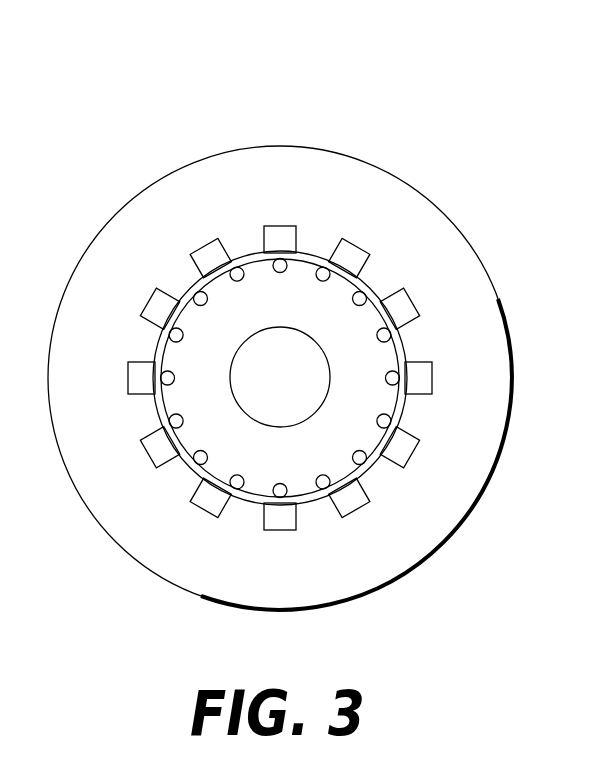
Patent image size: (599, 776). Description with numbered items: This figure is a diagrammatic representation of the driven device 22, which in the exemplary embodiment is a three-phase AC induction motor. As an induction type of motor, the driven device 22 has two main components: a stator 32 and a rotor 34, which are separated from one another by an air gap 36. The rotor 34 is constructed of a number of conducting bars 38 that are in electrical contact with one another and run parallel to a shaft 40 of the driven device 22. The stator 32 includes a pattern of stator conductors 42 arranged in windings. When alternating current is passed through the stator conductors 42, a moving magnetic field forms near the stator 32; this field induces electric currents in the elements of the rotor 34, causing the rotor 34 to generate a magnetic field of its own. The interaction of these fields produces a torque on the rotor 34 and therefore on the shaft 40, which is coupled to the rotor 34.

The driven device 22 is at (106, 150).
The stator 32 is at (418, 211).
The rotor 34 is at (377, 361).
The air gap 36 is at (368, 288).
The conducting bars 38 is at (263, 254).
The shaft 40 is at (245, 338).
The stator conductors 42 is at (343, 247).